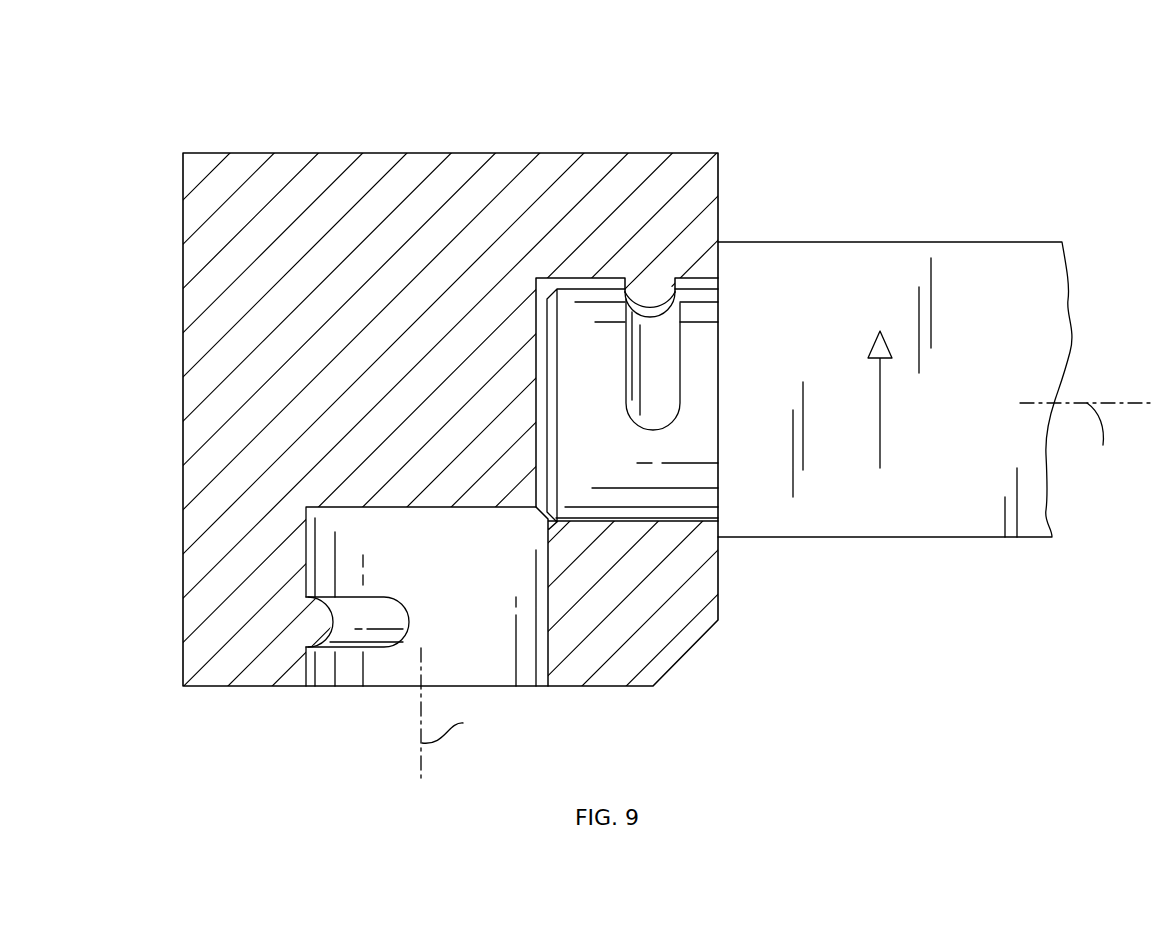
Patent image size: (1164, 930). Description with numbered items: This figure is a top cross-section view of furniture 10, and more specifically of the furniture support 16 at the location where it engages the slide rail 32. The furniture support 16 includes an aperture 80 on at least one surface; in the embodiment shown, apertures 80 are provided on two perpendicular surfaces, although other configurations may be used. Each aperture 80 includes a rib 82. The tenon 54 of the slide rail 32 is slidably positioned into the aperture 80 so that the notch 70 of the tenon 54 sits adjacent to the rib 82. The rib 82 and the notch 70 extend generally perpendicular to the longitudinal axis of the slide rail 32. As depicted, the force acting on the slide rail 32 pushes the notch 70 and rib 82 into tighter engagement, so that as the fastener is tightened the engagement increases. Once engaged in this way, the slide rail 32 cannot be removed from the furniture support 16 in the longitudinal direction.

The furniture 10 is at (845, 73).
The furniture support 16 is at (495, 128).
The slide rail 32 is at (842, 248).
The tenon 54 is at (580, 385).
The notch 70 is at (648, 392).
The aperture 80 is at (703, 277).
The rib 82 is at (651, 287).